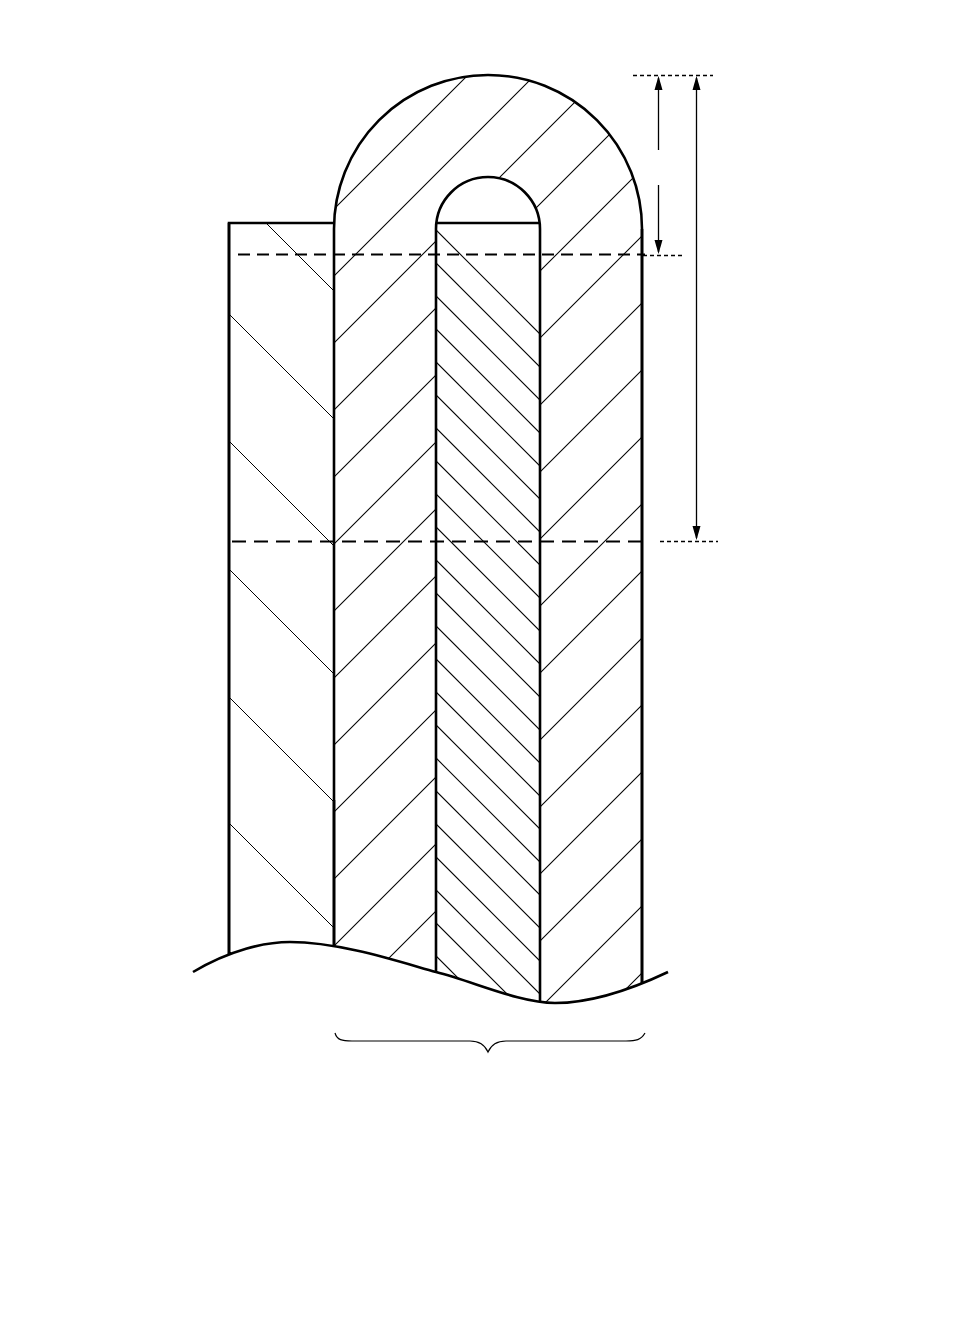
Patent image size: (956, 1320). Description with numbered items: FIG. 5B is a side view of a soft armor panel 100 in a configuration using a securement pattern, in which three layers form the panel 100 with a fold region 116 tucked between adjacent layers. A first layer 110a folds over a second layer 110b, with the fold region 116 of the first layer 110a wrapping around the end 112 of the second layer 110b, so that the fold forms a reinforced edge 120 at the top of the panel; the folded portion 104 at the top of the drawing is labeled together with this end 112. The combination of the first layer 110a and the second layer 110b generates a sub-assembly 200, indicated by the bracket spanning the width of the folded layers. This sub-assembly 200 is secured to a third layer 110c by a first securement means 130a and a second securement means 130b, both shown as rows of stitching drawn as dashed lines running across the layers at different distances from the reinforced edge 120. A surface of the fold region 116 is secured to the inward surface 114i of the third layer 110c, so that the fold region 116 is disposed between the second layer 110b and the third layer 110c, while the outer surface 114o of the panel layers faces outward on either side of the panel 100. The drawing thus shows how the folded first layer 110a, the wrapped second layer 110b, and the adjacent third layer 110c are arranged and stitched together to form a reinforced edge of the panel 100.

The soft armor panel 100 is at (223, 93).
The tube 104 is at (478, 513).
The end 112 is at (468, 57).
The first layer 110a is at (643, 622).
The second layer 110b is at (545, 768).
The third layer 110c is at (229, 661).
The outer surface 114o is at (435, 616).
The inward surface 114i is at (341, 911).
The fold region 116 is at (232, 609).
The reinforced edge 120 is at (300, 460).
The first securement means 130a is at (263, 255).
The second securement means 130b is at (267, 541).
The sub-assembly 200 is at (490, 1058).